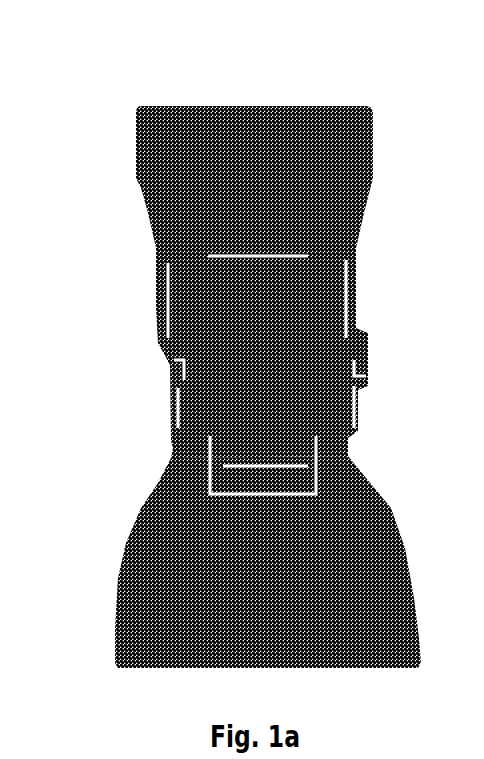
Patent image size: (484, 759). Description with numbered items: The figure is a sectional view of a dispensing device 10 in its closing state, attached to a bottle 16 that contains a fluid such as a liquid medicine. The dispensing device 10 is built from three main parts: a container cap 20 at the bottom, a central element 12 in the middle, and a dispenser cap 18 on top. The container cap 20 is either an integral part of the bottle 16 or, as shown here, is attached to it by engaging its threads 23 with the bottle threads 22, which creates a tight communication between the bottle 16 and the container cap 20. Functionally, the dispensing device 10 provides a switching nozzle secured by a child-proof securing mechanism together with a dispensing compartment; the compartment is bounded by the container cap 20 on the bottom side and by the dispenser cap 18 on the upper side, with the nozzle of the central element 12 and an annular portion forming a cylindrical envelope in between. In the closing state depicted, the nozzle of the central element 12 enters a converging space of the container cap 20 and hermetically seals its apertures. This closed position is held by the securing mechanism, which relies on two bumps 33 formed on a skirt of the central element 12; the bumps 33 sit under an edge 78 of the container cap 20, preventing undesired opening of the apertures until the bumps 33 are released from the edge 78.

The dispensing device 10 is at (249, 352).
The central element 12 is at (343, 265).
The bottle 16 is at (383, 527).
The dispenser cap 18 is at (362, 103).
The container cap 20 is at (307, 455).
The bottle threads 22 is at (165, 372).
The threads 23 is at (167, 380).
The bumps 33 is at (359, 381).
The edge 78 is at (355, 370).